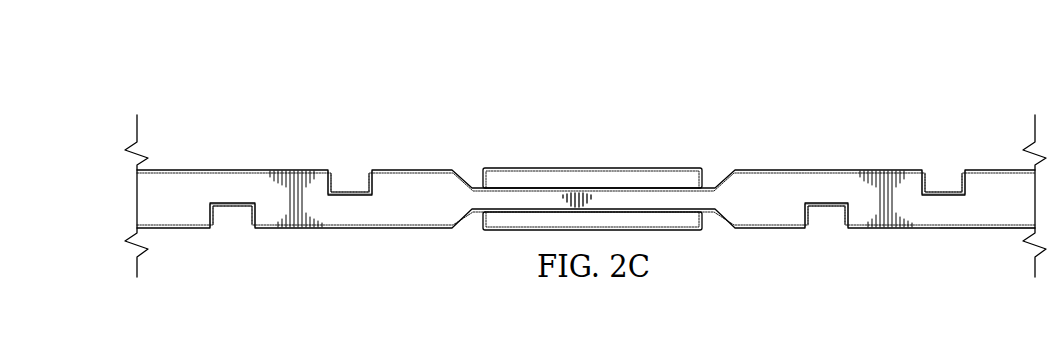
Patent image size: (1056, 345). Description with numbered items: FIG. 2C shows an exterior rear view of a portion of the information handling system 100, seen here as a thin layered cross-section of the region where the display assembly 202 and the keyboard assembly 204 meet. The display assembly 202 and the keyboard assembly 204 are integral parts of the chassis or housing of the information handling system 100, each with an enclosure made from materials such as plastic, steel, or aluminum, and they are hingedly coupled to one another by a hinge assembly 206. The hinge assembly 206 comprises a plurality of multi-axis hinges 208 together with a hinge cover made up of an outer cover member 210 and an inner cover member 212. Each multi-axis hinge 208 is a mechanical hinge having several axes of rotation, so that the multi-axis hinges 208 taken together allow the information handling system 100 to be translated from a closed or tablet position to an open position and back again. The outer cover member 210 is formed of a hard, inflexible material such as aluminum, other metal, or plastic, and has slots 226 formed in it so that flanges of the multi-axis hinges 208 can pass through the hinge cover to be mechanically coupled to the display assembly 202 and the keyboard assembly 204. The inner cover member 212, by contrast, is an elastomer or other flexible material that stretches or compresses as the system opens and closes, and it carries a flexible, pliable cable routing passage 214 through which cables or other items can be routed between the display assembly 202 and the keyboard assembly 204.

The information handling system 100 is at (410, 94).
The display assembly 202 is at (126, 170).
The keyboard assembly 204 is at (126, 204).
The hinge assembly 206 is at (947, 230).
The multi-axis hinge 208 is at (340, 172).
The outer cover member 210 is at (411, 230).
The inner cover member 212 is at (594, 186).
The cable routing passage 214 is at (564, 161).
The slot 226 is at (368, 182).